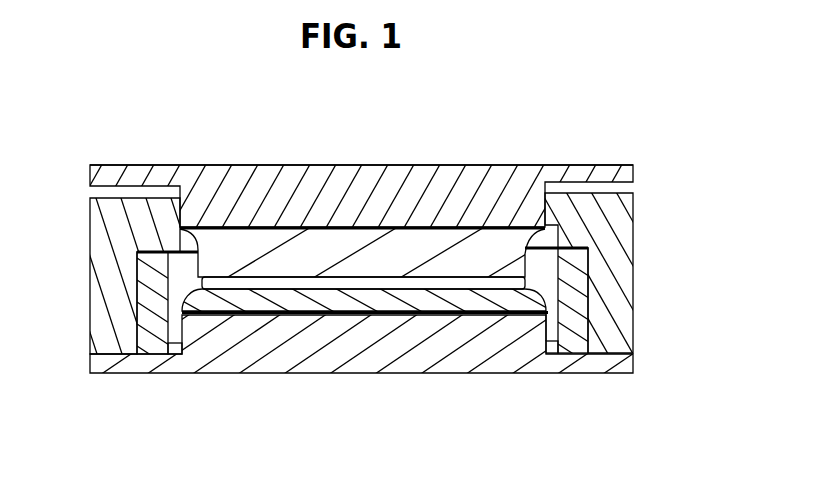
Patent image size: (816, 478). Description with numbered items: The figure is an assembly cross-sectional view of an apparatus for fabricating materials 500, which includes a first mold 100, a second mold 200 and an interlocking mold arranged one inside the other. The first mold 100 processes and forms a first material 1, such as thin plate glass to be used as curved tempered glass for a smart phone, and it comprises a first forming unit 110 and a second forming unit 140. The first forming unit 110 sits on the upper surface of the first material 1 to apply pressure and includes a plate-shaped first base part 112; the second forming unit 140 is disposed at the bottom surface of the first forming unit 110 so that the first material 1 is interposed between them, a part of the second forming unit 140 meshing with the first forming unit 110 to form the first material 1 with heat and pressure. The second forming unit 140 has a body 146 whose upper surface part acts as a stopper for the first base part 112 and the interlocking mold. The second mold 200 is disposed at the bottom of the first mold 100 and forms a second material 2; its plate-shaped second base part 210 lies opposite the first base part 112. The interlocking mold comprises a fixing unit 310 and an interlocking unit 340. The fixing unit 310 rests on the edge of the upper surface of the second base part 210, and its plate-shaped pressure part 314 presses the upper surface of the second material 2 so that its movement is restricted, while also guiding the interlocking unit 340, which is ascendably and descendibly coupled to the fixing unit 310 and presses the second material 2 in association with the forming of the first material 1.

The first material 1 is at (197, 227).
The second material 2 is at (170, 342).
The first mold 100 is at (412, 225).
The first forming unit 110 is at (405, 163).
The first base part 112 is at (430, 165).
The second forming unit 140 is at (640, 263).
The body 146 is at (90, 272).
The second mold 200 is at (377, 384).
The second base part 210 is at (405, 374).
The fixing unit 310 is at (140, 313).
The pressure part 314 is at (263, 303).
The interlocking unit 340 is at (248, 245).
The apparatus for fabricating materials 500 is at (407, 263).